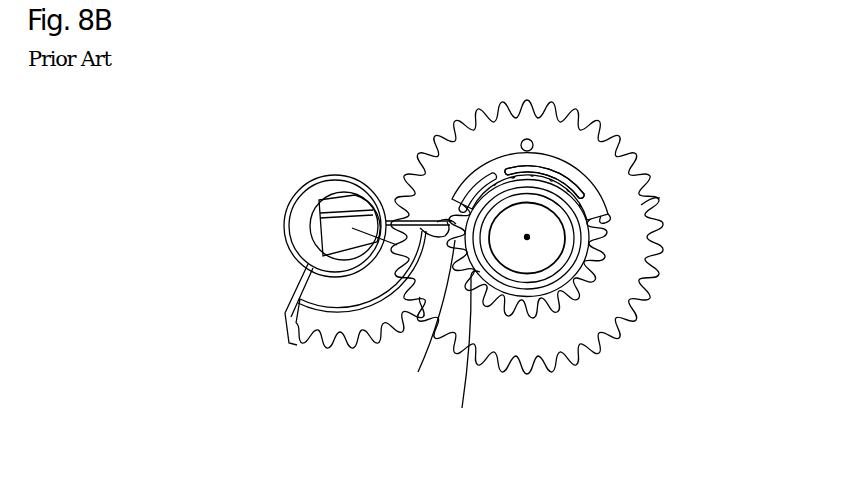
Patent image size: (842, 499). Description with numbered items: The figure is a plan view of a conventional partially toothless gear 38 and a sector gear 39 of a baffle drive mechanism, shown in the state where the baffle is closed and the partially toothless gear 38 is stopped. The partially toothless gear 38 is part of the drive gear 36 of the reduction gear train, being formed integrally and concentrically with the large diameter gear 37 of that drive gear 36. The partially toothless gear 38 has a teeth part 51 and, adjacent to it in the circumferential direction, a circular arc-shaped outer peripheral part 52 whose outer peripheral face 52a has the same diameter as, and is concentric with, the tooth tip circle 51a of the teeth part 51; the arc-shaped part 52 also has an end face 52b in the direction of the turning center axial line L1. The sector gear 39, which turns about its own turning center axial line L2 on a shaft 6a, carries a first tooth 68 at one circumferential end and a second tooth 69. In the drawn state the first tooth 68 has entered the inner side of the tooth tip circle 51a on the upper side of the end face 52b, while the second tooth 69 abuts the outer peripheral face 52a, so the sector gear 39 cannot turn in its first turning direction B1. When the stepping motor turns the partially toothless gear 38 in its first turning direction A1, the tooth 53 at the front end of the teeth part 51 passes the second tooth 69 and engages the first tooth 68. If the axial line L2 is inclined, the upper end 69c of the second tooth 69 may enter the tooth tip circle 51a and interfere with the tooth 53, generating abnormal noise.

The drive gear 36 is at (664, 161).
The large diameter gear 37 is at (660, 197).
The partially toothless gear 38 is at (600, 245).
The sector gear 39 is at (258, 234).
The teeth part 51 is at (558, 322).
The tooth tip circle 51a is at (458, 207).
The circular arc-shaped outer peripheral part 52 is at (480, 164).
The outer peripheral face 52a is at (458, 207).
The end face 52b is at (447, 212).
The tooth 53 is at (467, 351).
The shaft 6a is at (339, 202).
The first tooth 68 is at (437, 222).
The second tooth 69 is at (420, 228).
The end 69c is at (431, 318).
The turning center axial line L1 is at (527, 237).
The turning center axial line L2 is at (285, 200).
The first turning direction A1 is at (514, 427).
The first turning direction B1 is at (380, 364).